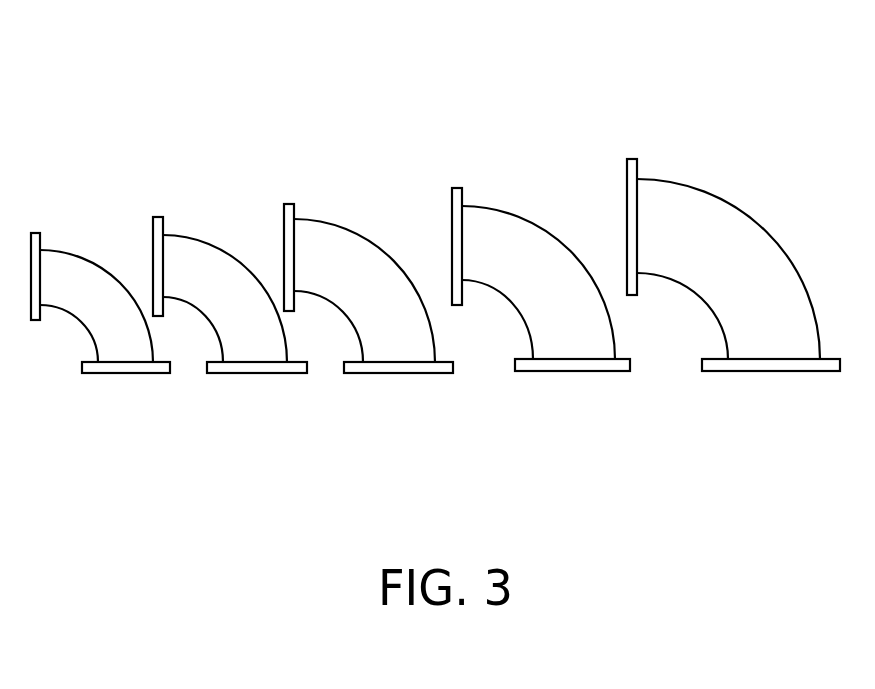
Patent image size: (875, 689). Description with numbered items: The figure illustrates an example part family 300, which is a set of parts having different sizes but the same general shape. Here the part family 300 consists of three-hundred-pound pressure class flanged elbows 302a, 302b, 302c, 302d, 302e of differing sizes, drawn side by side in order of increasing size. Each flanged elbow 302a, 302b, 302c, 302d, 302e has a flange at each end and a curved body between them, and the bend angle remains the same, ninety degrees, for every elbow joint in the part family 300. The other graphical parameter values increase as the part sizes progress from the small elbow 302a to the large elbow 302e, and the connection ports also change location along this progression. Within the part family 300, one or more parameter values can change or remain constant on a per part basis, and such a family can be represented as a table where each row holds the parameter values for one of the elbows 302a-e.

The part family 300 is at (178, 153).
The flanged elbow 302a is at (132, 373).
The flanged elbow 302b is at (286, 373).
The flanged elbow 302c is at (433, 373).
The flanged elbow 302d is at (586, 371).
The flanged elbow 302e is at (785, 371).